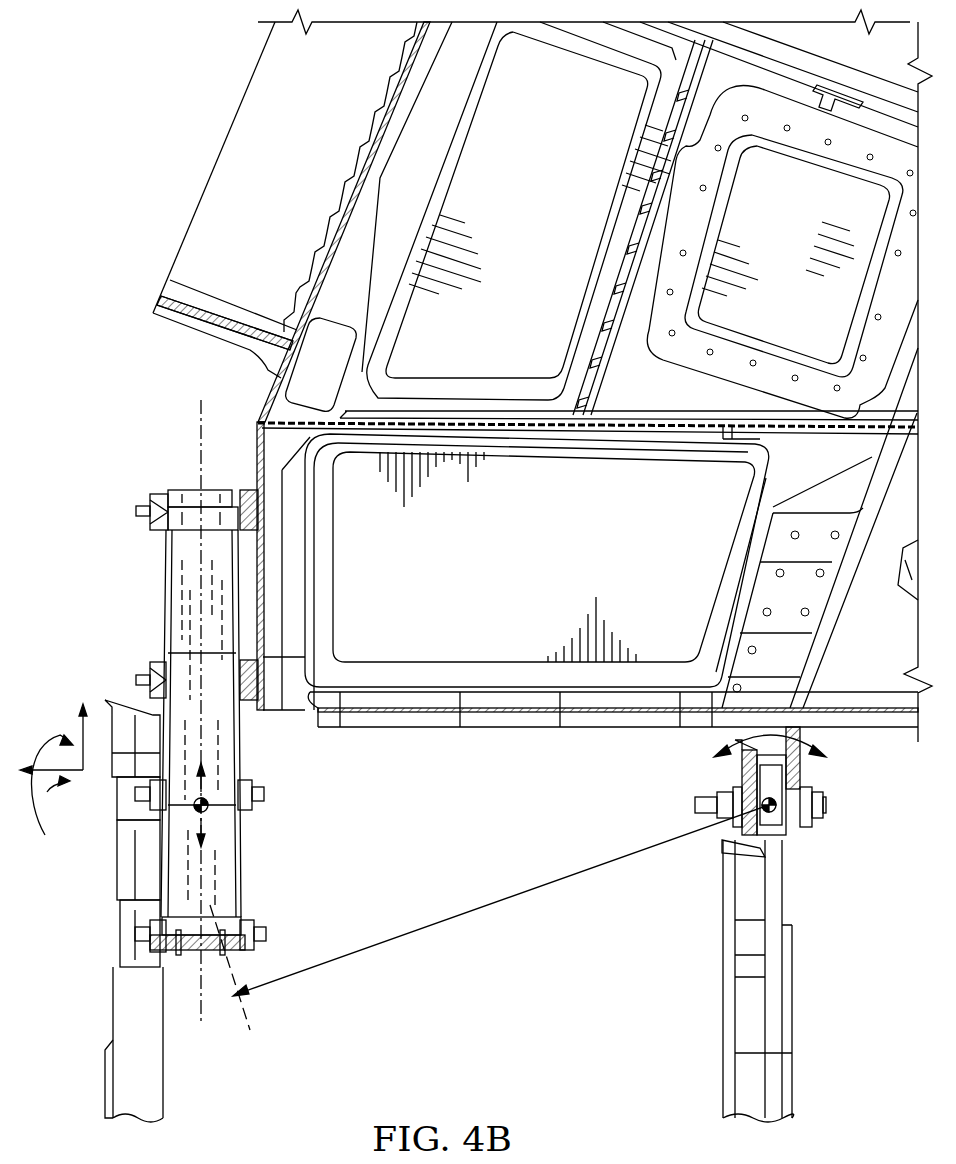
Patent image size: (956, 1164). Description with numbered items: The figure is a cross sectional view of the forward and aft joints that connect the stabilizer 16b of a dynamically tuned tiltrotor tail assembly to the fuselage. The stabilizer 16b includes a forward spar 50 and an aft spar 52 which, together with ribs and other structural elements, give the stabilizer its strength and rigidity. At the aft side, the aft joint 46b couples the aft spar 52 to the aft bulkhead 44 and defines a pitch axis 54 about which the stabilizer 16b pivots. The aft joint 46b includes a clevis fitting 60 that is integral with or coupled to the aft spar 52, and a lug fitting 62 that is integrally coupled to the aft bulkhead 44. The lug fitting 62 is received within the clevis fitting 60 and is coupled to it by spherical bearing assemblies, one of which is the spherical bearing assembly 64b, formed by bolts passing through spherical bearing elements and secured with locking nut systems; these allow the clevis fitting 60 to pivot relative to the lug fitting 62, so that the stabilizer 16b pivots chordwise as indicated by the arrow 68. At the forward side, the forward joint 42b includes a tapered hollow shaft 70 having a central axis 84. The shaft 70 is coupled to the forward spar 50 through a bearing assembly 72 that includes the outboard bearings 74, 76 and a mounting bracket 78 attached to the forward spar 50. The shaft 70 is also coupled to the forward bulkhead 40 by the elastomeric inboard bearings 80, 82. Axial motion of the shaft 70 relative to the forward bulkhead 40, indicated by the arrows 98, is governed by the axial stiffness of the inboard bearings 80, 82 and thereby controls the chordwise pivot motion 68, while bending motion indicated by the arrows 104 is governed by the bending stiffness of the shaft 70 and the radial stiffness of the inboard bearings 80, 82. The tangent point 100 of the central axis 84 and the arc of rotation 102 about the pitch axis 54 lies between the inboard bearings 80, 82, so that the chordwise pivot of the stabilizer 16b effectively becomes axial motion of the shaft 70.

The stabilizer 16b is at (222, 148).
The forward spar 50 is at (330, 300).
The aft spar 52 is at (880, 345).
The central axis 84 is at (198, 410).
The mounting bracket 78 is at (258, 462).
The outboard bearing 76 is at (152, 518).
The bearing assembly 72 is at (150, 538).
The shaft 70 is at (165, 596).
The forward joint 42b is at (150, 628).
The outboard bearing 74 is at (150, 686).
The arrows indicating axial motion 98 is at (207, 787).
The inboard bearing 80 is at (265, 788).
The tangent point 100 is at (208, 806).
The arrows indicating bending motion 104 is at (53, 785).
The inboard bearing 82 is at (262, 932).
The forward bulkhead 40 is at (115, 1020).
The arc of rotation 102 is at (250, 1025).
The arrow indicating chordwise pivot motion 68 is at (720, 742).
The clevis fitting 60 is at (740, 780).
The pitch axis 54 is at (752, 802).
The lug fitting 62 is at (745, 845).
The spherical bearing assembly 64b is at (825, 808).
The aft joint 46b is at (815, 840).
The aft bulkhead 44 is at (722, 1078).